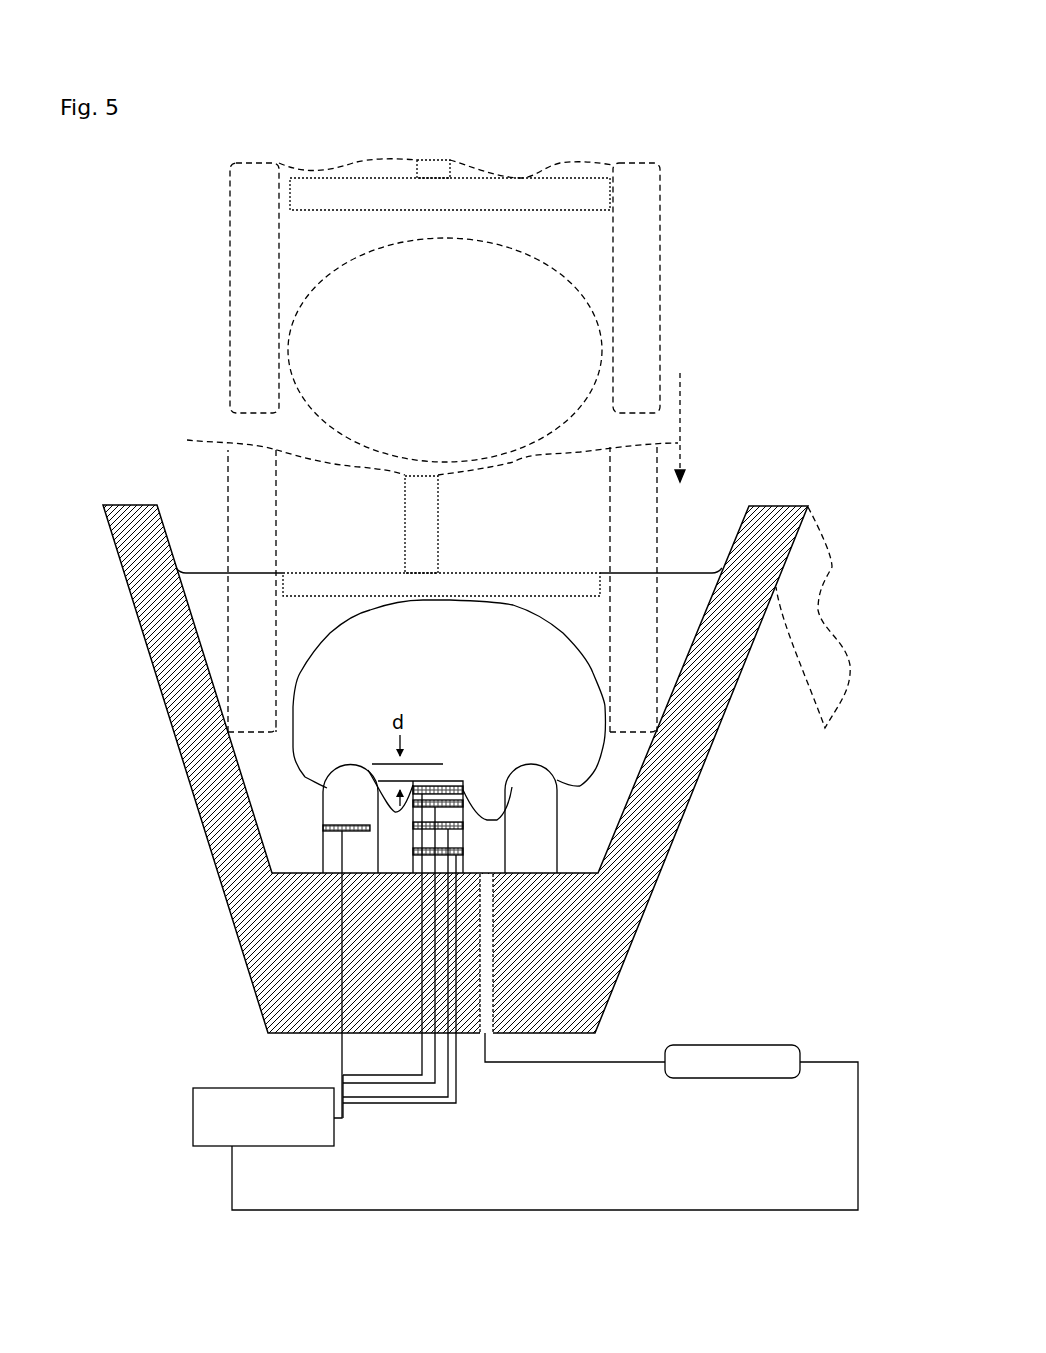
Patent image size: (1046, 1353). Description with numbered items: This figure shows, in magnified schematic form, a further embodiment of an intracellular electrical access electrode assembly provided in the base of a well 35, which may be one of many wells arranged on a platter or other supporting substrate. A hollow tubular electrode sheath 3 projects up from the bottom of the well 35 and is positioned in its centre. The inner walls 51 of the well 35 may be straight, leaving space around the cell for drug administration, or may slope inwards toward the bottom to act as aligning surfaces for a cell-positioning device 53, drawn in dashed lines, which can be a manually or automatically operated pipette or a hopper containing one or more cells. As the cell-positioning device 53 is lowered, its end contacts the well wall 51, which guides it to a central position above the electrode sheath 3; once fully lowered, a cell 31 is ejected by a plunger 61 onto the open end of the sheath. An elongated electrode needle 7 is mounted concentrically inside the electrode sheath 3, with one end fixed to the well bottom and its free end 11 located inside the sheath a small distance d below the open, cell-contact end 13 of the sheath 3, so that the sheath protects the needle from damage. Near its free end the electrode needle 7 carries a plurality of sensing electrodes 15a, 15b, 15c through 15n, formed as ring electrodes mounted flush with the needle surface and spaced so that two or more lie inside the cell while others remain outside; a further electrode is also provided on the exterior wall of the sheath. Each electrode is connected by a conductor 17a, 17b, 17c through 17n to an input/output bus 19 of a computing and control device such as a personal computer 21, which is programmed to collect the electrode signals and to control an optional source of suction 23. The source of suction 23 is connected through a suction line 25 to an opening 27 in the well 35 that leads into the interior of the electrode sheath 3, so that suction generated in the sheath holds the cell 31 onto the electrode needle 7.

The electrode sheath 3 is at (528, 833).
The electrode needle 7 is at (455, 842).
The free end of electrode needle 11 is at (448, 780).
The open cell-contact end of electrode sheath 13 is at (372, 795).
The sensing electrode 15a is at (463, 788).
The sensing electrode 15b is at (463, 802).
The sensing electrode 15c is at (463, 825).
The sensing electrode 15n is at (440, 855).
The conductor 17a is at (297, 1013).
The conductor 17b is at (342, 1033).
The conductor 17c is at (450, 1063).
The conductor 17n is at (430, 1105).
The input/output bus 19 is at (340, 1120).
The computing and control device 21 is at (250, 1138).
The source of suction 23 is at (728, 1072).
The suction line 25 is at (637, 1062).
The opening 27 is at (493, 1018).
The cell 31 is at (552, 635).
The well 35 is at (603, 820).
The inner walls of well 51 is at (167, 528).
The cell-positioning device 53 is at (642, 282).
The plunger 61 is at (495, 207).